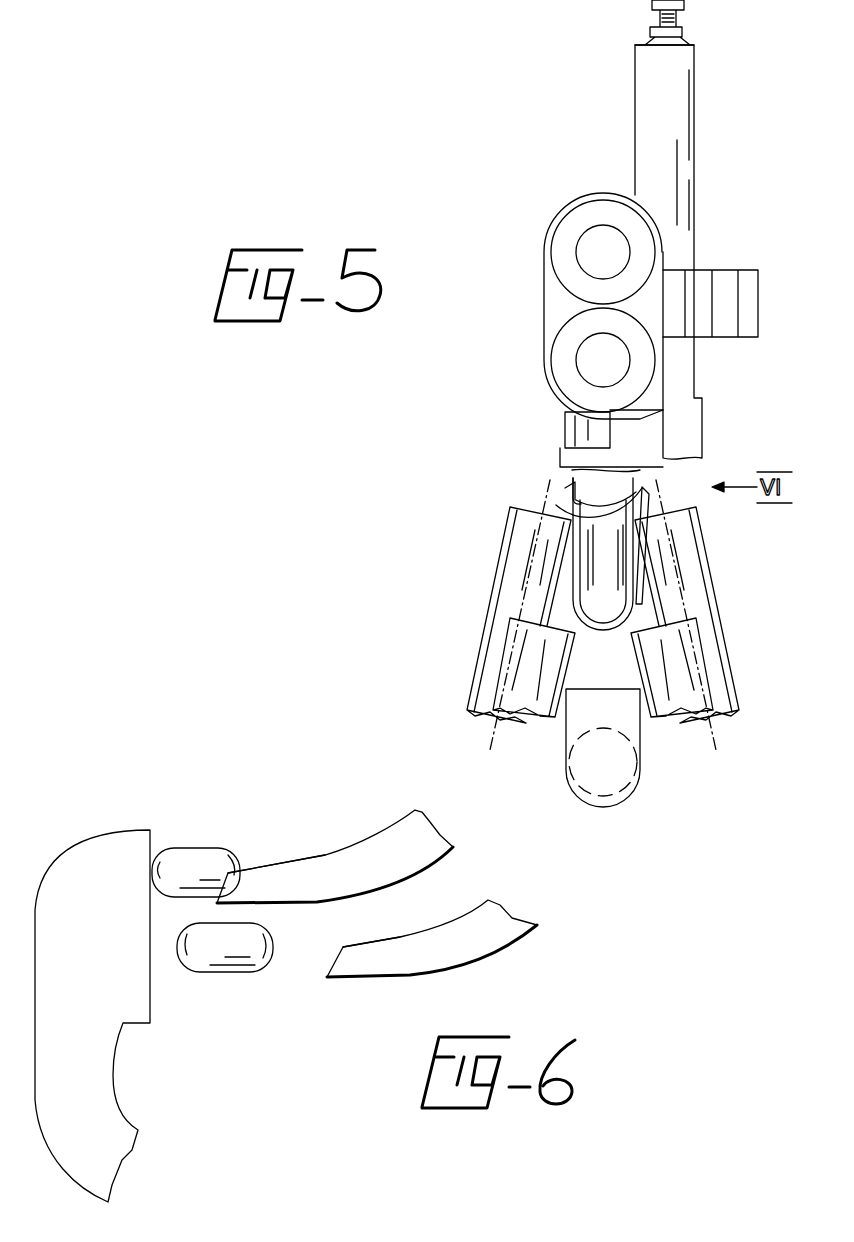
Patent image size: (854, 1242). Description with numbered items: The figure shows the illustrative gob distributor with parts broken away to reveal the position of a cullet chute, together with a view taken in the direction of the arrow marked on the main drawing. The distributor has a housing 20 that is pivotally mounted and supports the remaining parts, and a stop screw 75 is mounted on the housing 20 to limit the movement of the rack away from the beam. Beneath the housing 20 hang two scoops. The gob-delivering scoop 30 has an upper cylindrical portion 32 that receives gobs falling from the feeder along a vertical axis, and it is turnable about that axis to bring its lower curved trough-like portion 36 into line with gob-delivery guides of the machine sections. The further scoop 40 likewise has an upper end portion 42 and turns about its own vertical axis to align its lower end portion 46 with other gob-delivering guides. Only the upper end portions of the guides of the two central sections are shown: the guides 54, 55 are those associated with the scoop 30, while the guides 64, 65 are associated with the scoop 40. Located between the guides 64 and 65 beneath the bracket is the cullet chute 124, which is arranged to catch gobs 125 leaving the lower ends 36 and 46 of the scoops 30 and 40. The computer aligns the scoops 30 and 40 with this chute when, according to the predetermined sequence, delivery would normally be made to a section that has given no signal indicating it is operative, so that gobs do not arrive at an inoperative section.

In FIG. 5, the housing 20 is at (650, 435).
In FIG. 5, the gob-delivering scoop 30 is at (566, 492).
In FIG. 6, the gob-delivering scoop 30 is at (523, 948).
In FIG. 5, the upper cylindrical portion 32 is at (585, 242).
In FIG. 5, the lower curved trough-like portion 36 is at (570, 510).
In FIG. 6, the lower curved trough-like portion 36 is at (382, 975).
In FIG. 5, the further scoop 40 is at (645, 510).
In FIG. 6, the further scoop 40 is at (458, 859).
In FIG. 5, the upper end portion 42 is at (585, 358).
In FIG. 5, the lower end portion 46 is at (605, 595).
In FIG. 6, the lower end portion 46 is at (293, 872).
In FIG. 5, the gob-delivering guide centre-line 54 is at (530, 540).
In FIG. 5, the gob-delivering guide centre-line 55 is at (673, 548).
In FIG. 5, the gob-delivering guide 64 is at (534, 690).
In FIG. 5, the gob-delivering guide 65 is at (680, 652).
In FIG. 5, the stop screw 75 is at (661, 22).
In FIG. 5, the cullet chute 124 is at (620, 790).
In FIG. 6, the cullet chute 124 is at (132, 955).
In FIG. 6, the gobs 125 is at (196, 850).